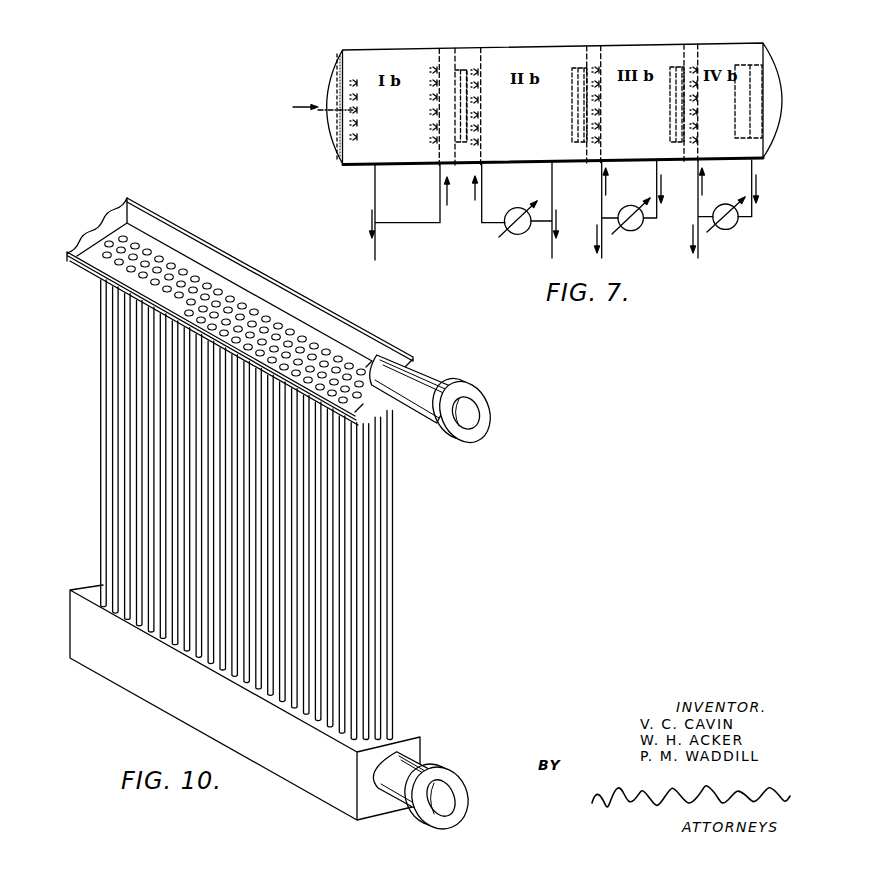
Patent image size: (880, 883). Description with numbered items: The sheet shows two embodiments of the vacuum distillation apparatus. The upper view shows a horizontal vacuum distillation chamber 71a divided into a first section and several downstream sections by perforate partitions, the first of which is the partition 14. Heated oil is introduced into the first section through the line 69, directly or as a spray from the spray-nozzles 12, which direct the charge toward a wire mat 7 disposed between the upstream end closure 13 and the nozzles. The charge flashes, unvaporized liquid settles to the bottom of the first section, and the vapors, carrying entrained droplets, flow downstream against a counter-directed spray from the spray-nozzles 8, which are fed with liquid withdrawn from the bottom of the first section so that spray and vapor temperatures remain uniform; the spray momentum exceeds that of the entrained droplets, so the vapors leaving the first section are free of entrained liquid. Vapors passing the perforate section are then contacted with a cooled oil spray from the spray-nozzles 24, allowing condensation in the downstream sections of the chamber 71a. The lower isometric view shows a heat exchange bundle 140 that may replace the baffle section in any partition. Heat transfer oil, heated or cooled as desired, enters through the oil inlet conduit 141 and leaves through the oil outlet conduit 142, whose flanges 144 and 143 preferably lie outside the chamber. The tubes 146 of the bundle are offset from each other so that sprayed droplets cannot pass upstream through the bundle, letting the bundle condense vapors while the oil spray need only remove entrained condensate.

In FIG. 7, the vacuum distillation chamber 71a is at (540, 44).
In FIG. 7, the upstream end closure 13 is at (332, 82).
In FIG. 7, the wire mat 7 is at (330, 97).
In FIG. 7, the line 69 is at (321, 112).
In FIG. 7, the spray-nozzles 12 is at (357, 126).
In FIG. 7, the spray-nozzles 8 is at (435, 128).
In FIG. 7, the first partition 14 is at (455, 53).
In FIG. 7, the spray-nozzles 24 is at (483, 113).
In FIG. 10, the heat exchange bundle 140 is at (394, 548).
In FIG. 10, the oil inlet conduit 141 is at (417, 772).
In FIG. 10, the oil outlet conduit 142 is at (433, 385).
In FIG. 10, the flange 143 is at (482, 398).
In FIG. 10, the flange 144 is at (458, 787).
In FIG. 10, the tubes 146 is at (343, 361).